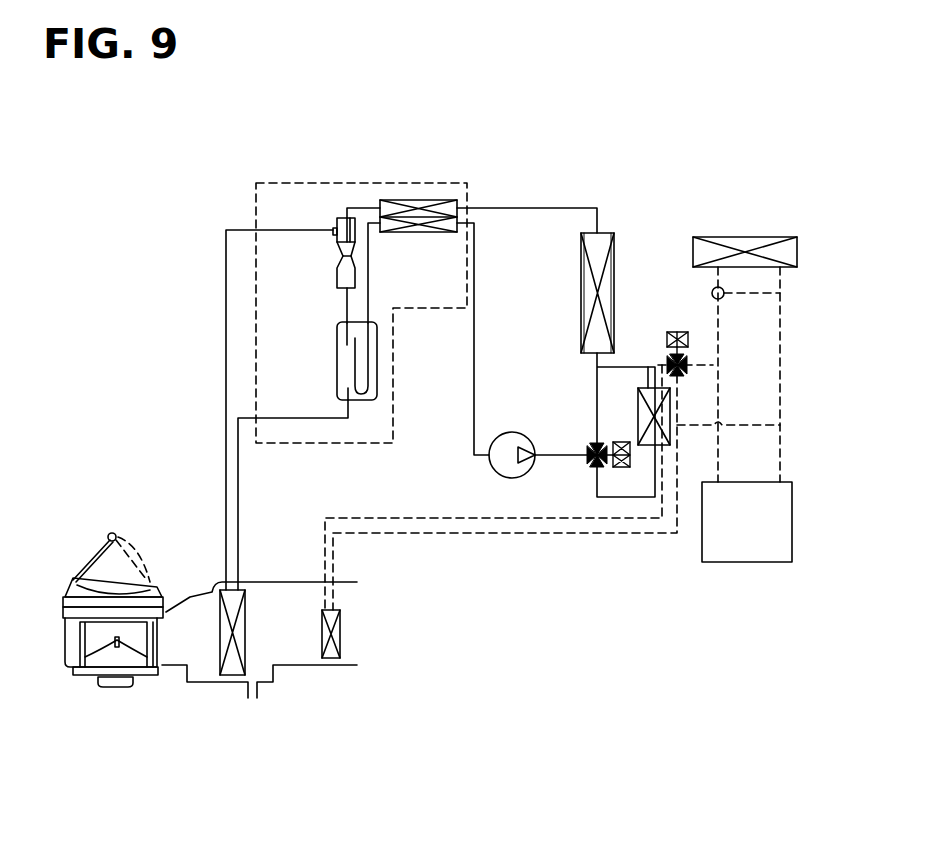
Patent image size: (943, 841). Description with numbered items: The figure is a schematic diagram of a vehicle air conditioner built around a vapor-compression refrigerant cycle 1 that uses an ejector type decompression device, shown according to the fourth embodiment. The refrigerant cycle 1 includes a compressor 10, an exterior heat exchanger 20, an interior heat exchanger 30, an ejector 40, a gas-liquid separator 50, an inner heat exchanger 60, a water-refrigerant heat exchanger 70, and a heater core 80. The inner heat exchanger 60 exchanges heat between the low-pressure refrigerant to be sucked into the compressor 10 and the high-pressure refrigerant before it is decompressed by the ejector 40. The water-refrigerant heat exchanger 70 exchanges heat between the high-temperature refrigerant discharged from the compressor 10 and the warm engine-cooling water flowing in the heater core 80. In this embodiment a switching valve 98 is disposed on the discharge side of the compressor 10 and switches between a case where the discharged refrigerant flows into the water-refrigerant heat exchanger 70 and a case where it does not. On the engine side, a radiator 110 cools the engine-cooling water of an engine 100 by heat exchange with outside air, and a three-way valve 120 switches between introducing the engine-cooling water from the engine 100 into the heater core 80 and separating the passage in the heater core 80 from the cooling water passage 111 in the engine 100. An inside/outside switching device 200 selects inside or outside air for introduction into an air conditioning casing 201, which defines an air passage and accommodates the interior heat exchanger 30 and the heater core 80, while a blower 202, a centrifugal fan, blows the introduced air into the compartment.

The refrigerant cycle 1 is at (617, 193).
The compressor 10 is at (517, 432).
The exterior heat exchanger 20 is at (581, 297).
The interior heat exchanger 30 is at (212, 640).
The ejector 40 is at (337, 250).
The gas-liquid separator 50 is at (377, 360).
The inner heat exchanger 60 is at (410, 200).
The water-refrigerant heat exchanger 70 is at (646, 367).
The heater core 80 is at (341, 645).
The switching valve 98 is at (588, 459).
The engine 100 is at (748, 562).
The radiator 110 is at (748, 237).
The cooling water passage 111 is at (783, 378).
The three-way valve 120 is at (664, 332).
The inside/outside switching device 200 is at (82, 575).
The air conditioning casing 201 is at (285, 582).
The blower 202 is at (72, 668).